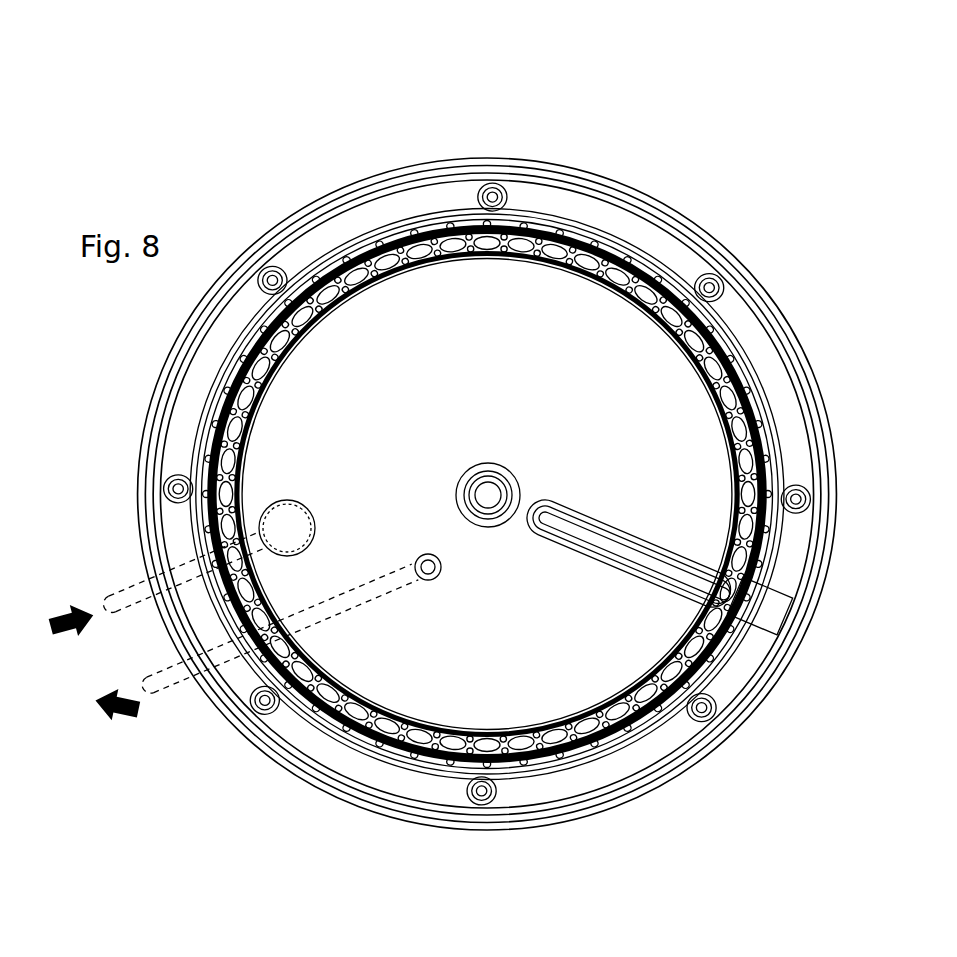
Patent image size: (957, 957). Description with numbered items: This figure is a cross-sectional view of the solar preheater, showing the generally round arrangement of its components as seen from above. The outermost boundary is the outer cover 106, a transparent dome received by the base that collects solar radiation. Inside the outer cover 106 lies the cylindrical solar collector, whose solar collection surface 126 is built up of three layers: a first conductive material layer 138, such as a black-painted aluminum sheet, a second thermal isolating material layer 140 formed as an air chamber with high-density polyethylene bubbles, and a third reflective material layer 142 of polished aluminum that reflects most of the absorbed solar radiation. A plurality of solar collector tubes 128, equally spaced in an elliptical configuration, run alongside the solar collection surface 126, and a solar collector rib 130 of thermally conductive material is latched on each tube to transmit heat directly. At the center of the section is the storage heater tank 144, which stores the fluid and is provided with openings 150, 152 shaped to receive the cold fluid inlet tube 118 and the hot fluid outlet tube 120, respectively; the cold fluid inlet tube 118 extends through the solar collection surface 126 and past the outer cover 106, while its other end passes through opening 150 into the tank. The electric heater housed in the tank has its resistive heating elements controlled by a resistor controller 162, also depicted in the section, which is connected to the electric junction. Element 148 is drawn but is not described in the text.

The outer cover 106 is at (834, 425).
The cold fluid inlet tube 118 is at (126, 590).
The hot fluid outlet tube 120 is at (173, 699).
The solar collection surface 126 is at (338, 251).
The solar collector tube 128 is at (801, 501).
The solar collector rib 130 is at (789, 475).
The first conductive material layer 138 is at (587, 229).
The second thermal isolating material layer 140 is at (619, 247).
The third reflective material layer 142 is at (649, 268).
The storage heater tank 144 is at (709, 365).
The ball bearing 148 is at (546, 247).
The opening 150 is at (308, 503).
The opening 152 is at (434, 581).
The resistor controller 162 is at (775, 612).